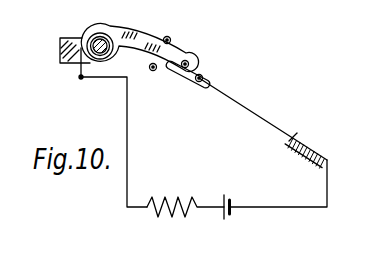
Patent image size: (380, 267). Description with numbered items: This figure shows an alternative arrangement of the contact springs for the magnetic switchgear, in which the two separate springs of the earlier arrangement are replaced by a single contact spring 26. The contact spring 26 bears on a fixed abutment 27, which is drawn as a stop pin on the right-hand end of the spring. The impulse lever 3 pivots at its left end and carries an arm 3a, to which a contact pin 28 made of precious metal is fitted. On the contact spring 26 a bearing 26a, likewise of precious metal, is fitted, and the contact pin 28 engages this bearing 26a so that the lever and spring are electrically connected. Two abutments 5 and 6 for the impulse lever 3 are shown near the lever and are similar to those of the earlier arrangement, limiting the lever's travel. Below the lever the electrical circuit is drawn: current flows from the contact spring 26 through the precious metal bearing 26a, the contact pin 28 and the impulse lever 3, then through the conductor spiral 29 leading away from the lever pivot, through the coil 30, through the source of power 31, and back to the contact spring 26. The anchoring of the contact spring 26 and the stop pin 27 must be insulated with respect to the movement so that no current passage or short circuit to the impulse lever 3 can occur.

The impulse lever 3 is at (135, 43).
The arm of the impulse lever 3a is at (179, 58).
The abutment 5 is at (152, 71).
The abutment 6 is at (169, 37).
The contact spring 26 is at (229, 97).
The precious metal bearing 26a is at (177, 67).
The fixed abutment 27 is at (202, 76).
The contact pin 28 is at (188, 61).
The conductor spiral 29 is at (81, 60).
The coil 30 is at (185, 220).
The source of power 31 is at (228, 219).